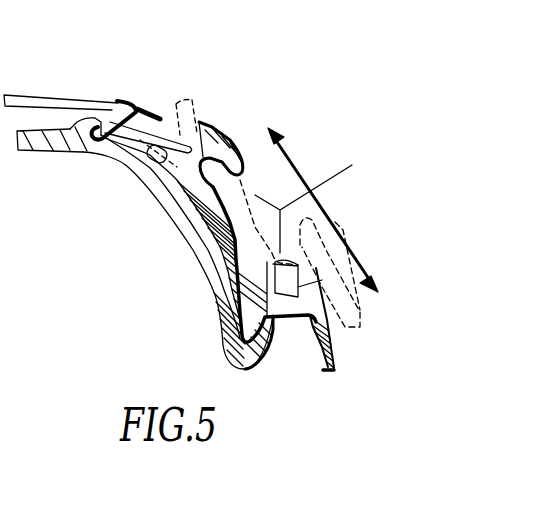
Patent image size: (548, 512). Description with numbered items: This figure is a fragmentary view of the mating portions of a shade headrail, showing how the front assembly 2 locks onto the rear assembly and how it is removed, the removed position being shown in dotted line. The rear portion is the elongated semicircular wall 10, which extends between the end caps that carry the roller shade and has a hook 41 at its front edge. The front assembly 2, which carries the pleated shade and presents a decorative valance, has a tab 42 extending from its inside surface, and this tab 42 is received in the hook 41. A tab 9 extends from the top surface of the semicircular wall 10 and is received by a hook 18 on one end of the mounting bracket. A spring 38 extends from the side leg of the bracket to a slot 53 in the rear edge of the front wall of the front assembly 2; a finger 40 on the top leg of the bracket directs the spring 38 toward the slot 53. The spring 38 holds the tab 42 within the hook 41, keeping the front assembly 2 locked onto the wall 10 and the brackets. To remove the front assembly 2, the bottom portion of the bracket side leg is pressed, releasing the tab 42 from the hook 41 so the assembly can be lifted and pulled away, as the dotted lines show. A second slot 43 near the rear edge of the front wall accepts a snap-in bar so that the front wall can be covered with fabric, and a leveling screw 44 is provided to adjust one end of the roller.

The front assembly 2 is at (290, 316).
The tab 9 is at (82, 121).
The semicircular wall 10 is at (193, 217).
The hook 18 is at (125, 103).
The spring 38 is at (177, 120).
The finger 40 is at (152, 110).
The hook 41 is at (257, 366).
The tab 42 is at (240, 313).
The slot 43 is at (313, 200).
The leveling screw 44 is at (343, 234).
The slot 53 is at (198, 125).